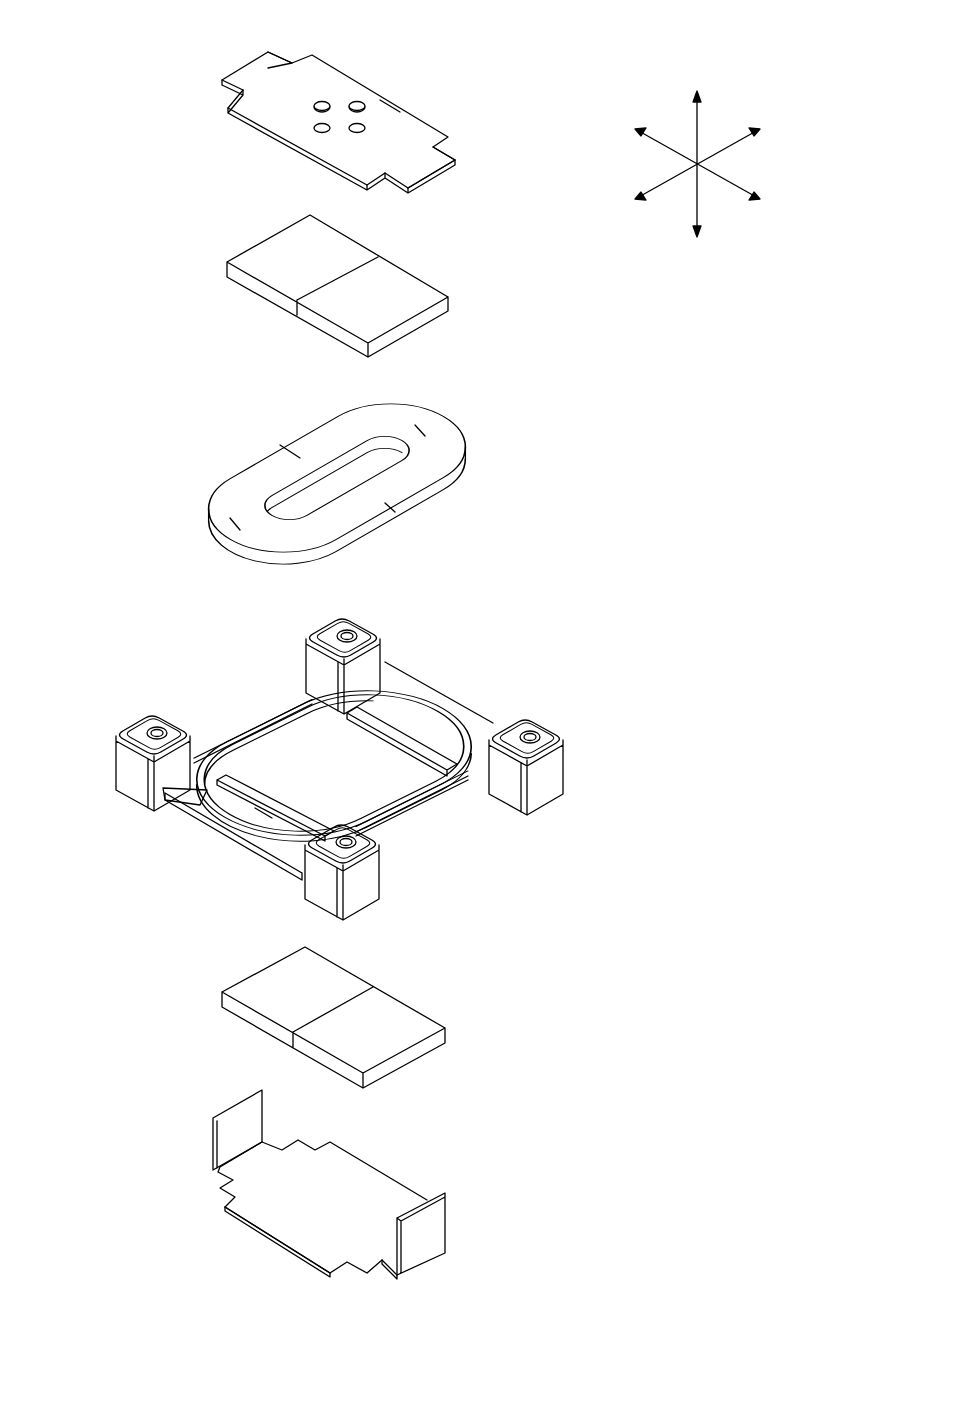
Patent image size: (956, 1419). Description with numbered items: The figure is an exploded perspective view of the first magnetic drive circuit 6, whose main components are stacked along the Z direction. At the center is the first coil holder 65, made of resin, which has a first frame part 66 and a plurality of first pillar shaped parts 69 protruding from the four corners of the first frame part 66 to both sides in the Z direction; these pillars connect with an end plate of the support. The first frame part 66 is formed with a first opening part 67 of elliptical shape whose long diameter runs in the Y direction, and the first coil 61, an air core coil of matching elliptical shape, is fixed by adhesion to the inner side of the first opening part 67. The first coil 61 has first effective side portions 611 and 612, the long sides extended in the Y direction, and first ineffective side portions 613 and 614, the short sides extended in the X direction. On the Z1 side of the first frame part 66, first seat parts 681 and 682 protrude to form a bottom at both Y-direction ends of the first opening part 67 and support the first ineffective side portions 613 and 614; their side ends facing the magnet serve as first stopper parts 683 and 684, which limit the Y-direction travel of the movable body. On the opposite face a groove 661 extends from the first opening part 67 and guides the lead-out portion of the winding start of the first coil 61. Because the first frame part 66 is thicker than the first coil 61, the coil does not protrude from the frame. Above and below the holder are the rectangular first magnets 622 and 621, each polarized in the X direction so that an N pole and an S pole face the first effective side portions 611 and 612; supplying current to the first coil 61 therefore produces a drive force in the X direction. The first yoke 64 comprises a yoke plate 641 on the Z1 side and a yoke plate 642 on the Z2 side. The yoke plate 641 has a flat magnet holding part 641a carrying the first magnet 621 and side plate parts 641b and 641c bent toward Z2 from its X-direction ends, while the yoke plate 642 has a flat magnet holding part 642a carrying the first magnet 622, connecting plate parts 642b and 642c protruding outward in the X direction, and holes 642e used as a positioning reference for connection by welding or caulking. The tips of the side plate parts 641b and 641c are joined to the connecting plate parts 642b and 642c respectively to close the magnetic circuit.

The first magnetic drive circuit 6 is at (91, 225).
The first yoke 64 is at (367, 646).
The yoke plate 642 is at (386, 110).
The magnet holding part 642a is at (387, 107).
The connecting plate part 642b is at (430, 163).
The connecting plate part 642c is at (259, 64).
The holes 642e is at (357, 101).
The yoke plate 641 is at (354, 1173).
The magnet holding part 641a is at (283, 1225).
The side plate part 641b is at (440, 1228).
The side plate part 641c is at (242, 1122).
The first magnet 622 is at (423, 297).
The first magnet 621 is at (420, 1022).
The first coil 61 is at (335, 483).
The first effective side portion 611 is at (390, 507).
The first effective side portion 612 is at (288, 450).
The first ineffective side portion 613 is at (235, 522).
The first ineffective side portion 614 is at (420, 430).
The first coil holder 65 is at (347, 750).
The first pillar shaped parts 69 is at (298, 651).
The first seat part 682 is at (438, 710).
The first stopper part 683 is at (253, 792).
The first stopper part 684 is at (380, 727).
The first frame part 66 is at (397, 818).
The first opening part 67 is at (418, 807).
The groove 661 is at (188, 792).
The first seat part 681 is at (263, 813).